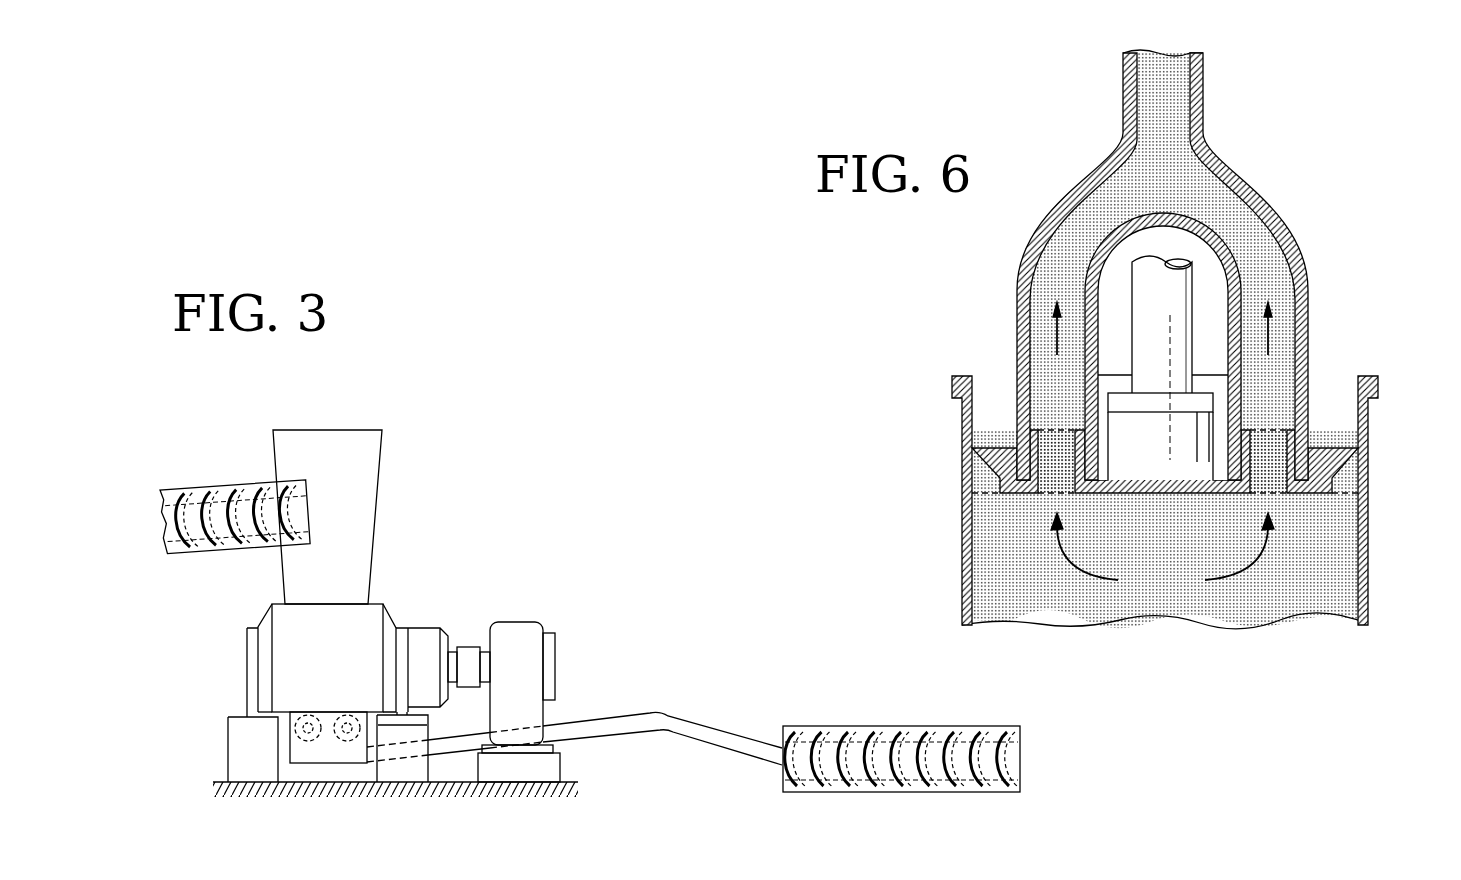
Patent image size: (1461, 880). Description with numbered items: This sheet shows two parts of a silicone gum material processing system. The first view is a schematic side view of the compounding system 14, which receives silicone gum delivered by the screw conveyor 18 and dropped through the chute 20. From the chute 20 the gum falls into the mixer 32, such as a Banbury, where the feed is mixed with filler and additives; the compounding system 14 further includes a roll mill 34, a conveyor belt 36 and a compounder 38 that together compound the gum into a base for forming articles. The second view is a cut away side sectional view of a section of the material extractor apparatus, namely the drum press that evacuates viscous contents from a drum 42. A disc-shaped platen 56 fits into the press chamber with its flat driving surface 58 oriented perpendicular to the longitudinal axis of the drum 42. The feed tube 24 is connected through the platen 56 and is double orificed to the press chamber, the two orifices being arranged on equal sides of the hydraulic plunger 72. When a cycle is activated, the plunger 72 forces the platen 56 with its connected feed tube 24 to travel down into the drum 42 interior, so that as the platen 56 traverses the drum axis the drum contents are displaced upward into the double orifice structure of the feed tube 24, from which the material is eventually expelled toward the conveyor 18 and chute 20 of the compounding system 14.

In FIG. 3, the compounding system 14 is at (556, 538).
In FIG. 3, the conveyor 18 is at (197, 490).
In FIG. 3, the chute 20 is at (382, 452).
In FIG. 6, the feed tube 24 is at (1017, 303).
In FIG. 3, the mixer 32 is at (280, 616).
In FIG. 3, the roll mill 34 is at (313, 757).
In FIG. 3, the conveyor belt 36 is at (630, 722).
In FIG. 3, the compounder 38 is at (895, 726).
In FIG. 6, the drum 42 is at (962, 470).
In FIG. 6, the platen 56 is at (1313, 478).
In FIG. 6, the flat driving surface 58 is at (1300, 492).
In FIG. 6, the plunger 72 is at (1118, 400).